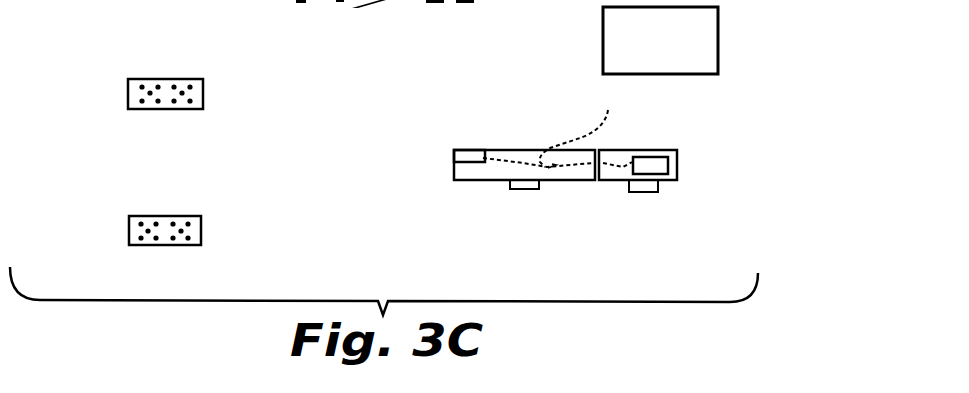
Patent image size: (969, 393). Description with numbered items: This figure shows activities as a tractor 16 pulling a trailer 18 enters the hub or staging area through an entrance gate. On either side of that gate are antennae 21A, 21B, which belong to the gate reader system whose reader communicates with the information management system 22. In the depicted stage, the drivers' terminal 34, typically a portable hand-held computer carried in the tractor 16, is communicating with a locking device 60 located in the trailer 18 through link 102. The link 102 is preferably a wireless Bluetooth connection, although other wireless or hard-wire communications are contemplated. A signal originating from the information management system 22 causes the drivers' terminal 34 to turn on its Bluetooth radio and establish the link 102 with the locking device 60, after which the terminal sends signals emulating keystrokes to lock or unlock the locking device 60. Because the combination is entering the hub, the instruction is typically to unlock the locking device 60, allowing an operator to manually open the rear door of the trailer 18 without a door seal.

The antenna 21A is at (165, 77).
The antenna 21B is at (160, 247).
The information management system 22 is at (670, 57).
The trailer 18 is at (485, 178).
The locking device 60 is at (472, 148).
The tractor 16 is at (623, 173).
The drivers' terminal 34 is at (665, 158).
The link 102 is at (620, 129).